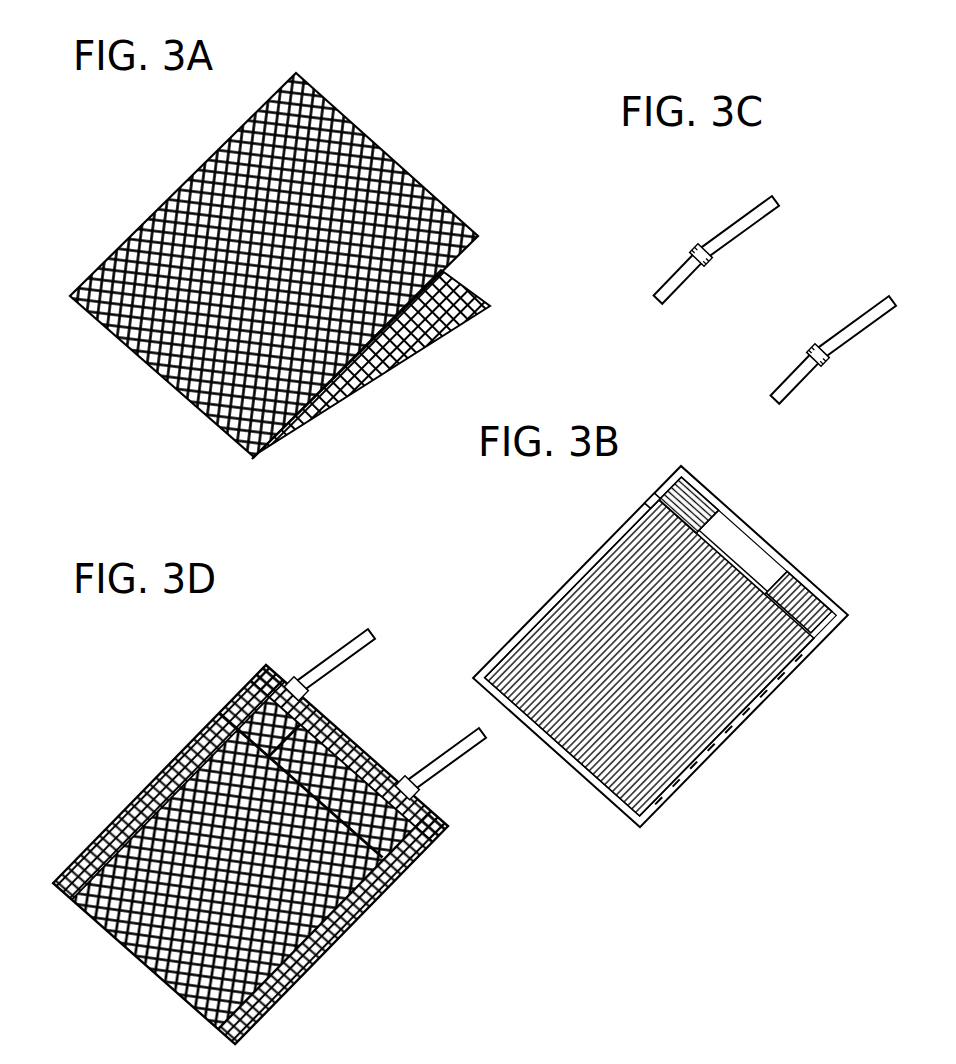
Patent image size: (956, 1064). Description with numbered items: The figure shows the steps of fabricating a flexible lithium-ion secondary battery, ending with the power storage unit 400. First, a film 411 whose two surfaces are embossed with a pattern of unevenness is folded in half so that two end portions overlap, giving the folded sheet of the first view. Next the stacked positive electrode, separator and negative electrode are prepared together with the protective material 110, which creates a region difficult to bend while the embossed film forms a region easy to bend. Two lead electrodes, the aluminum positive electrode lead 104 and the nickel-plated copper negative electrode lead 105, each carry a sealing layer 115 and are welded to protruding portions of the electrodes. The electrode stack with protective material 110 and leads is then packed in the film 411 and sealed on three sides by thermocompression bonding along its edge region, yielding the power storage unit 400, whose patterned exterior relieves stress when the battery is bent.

In FIG. 3A, the film 411 is at (425, 192).
In FIG. 3C, the positive electrode lead 104 is at (727, 215).
In FIG. 3D, the positive electrode lead 104 is at (325, 651).
In FIG. 3C, the negative electrode lead 105 is at (848, 307).
In FIG. 3D, the negative electrode lead 105 is at (441, 761).
In FIG. 3C, the sealing layer 115 is at (683, 240).
In FIG. 3D, the sealing layer 115 is at (285, 672).
In FIG. 3B, the protective material 110 is at (698, 646).
In FIG. 3D, the protective material 110 is at (425, 830).
In FIG. 3D, the power storage unit 400 is at (283, 821).